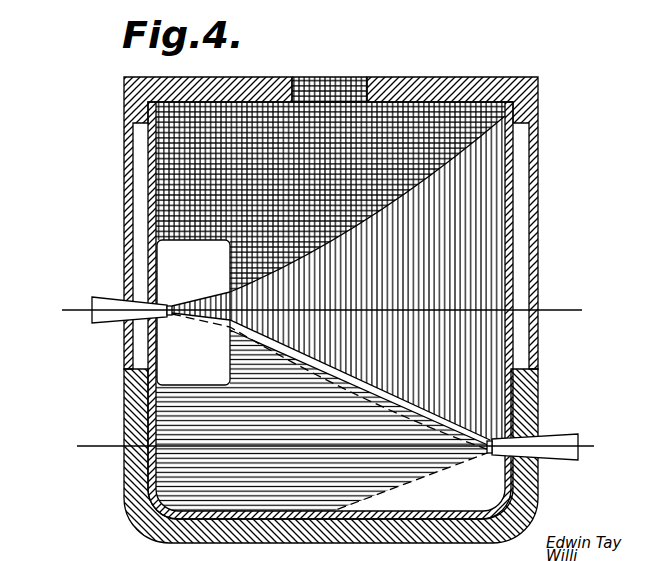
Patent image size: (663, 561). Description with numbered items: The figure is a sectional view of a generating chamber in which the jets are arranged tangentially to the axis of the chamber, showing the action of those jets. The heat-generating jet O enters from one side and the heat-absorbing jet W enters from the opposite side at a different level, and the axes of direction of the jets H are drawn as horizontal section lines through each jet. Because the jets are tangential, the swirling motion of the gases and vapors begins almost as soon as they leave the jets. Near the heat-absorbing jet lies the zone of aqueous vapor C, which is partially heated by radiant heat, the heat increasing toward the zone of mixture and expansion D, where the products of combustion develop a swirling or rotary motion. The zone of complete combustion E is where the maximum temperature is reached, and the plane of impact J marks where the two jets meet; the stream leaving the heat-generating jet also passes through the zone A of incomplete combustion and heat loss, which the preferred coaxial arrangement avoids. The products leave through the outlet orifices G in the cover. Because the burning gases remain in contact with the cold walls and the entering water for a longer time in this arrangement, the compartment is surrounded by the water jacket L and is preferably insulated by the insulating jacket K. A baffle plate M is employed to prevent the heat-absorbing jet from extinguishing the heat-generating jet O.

The outlet orifices G is at (337, 78).
The water jacket L is at (128, 172).
The zone of mixture and expansion D is at (330, 184).
The zone of complete combustion E is at (338, 278).
The heat-generating jet O is at (123, 296).
The baffle plate M is at (193, 312).
The axes of direction of the jets H is at (327, 379).
The zone of incomplete combustion A is at (331, 382).
The plane of impact J is at (331, 376).
The zone of aqueous vapor C is at (323, 420).
The heat-absorbing jet W is at (533, 428).
The insulating jacket K is at (333, 527).